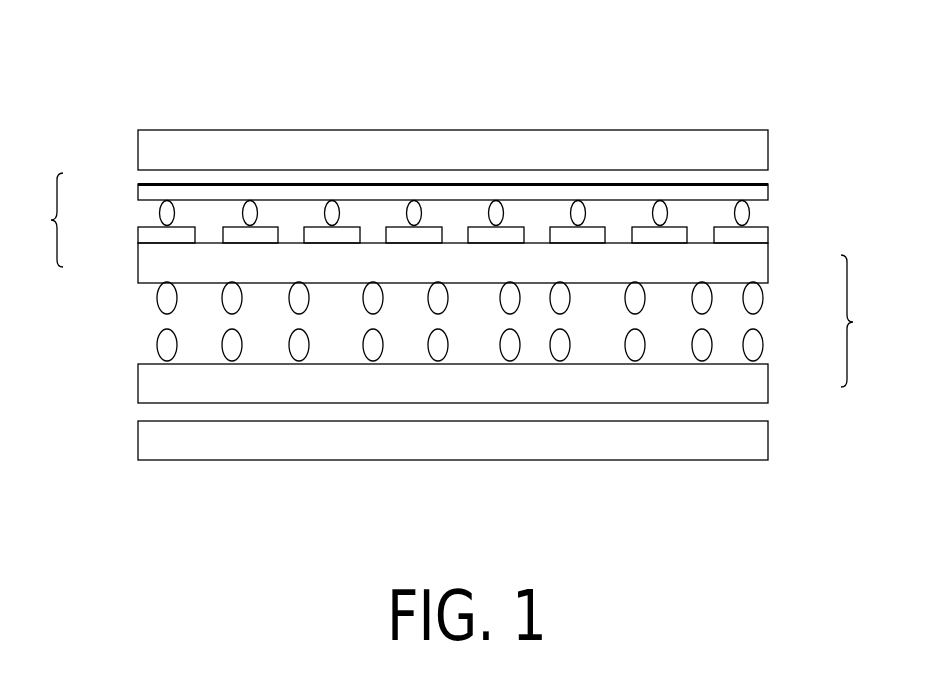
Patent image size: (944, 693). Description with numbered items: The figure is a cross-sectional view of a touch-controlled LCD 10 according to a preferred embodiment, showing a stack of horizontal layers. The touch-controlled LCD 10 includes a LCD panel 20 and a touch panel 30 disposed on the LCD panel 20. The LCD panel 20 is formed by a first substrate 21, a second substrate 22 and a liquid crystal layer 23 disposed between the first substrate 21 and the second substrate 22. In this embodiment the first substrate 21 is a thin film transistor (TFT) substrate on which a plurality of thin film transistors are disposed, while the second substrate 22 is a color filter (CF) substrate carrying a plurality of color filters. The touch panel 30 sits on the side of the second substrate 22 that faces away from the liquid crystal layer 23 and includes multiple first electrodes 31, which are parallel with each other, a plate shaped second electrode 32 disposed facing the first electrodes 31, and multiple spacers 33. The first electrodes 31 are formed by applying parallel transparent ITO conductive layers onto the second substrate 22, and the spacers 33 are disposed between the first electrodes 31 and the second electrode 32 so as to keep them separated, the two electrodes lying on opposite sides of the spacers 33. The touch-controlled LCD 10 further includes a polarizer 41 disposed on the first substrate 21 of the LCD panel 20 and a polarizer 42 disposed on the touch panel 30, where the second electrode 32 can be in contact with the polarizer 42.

The touch-controlled LCD 10 is at (462, 83).
The LCD panel 20 is at (864, 321).
The first substrate 21 is at (755, 378).
The second substrate 22 is at (755, 262).
The liquid crystal layer 23 is at (786, 285).
The touch panel 30 is at (40, 220).
The first electrodes 31 is at (143, 237).
The plate shaped second electrode 32 is at (147, 190).
The spacers 33 is at (160, 212).
The polarizer 41 is at (750, 450).
The polarizer 42 is at (745, 138).